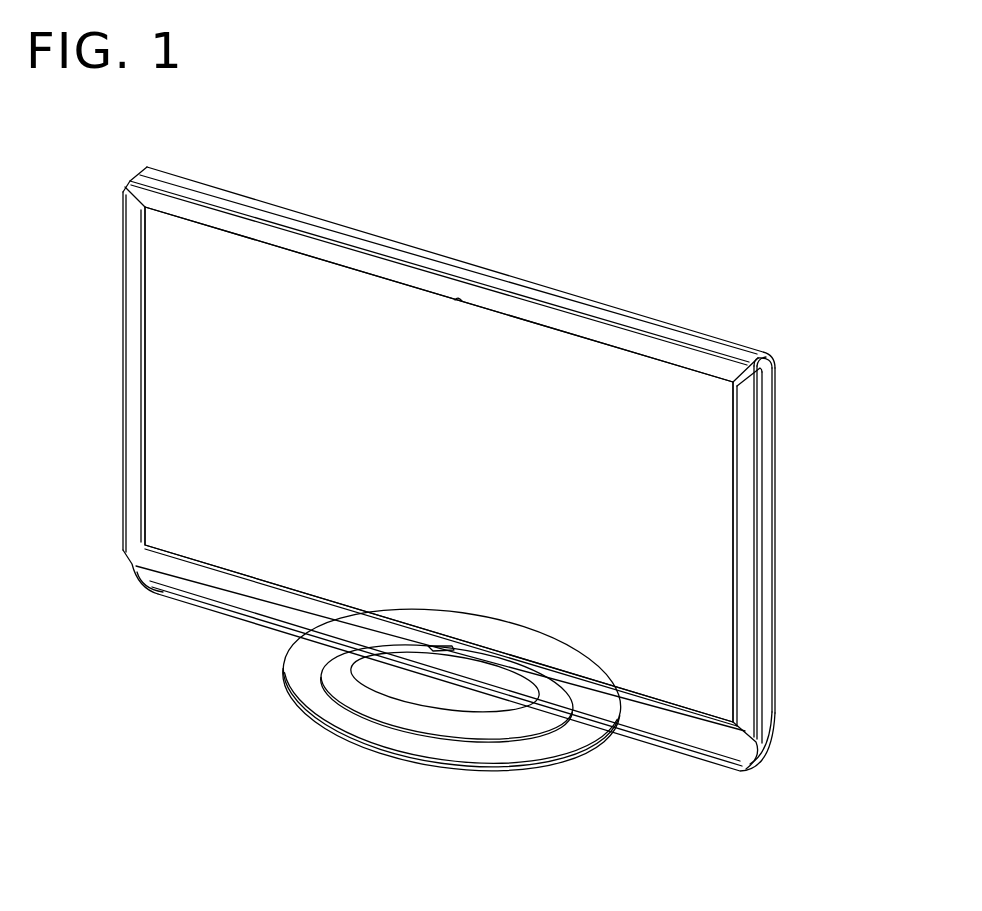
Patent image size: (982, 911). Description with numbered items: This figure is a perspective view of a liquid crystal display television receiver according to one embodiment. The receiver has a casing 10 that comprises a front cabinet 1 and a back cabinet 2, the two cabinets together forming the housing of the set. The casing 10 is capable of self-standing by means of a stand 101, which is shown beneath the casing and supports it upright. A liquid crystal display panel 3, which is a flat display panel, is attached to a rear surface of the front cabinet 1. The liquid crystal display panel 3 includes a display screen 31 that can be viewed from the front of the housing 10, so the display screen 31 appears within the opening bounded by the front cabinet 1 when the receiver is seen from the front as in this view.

The casing 10 is at (739, 243).
The front cabinet 1 is at (632, 326).
The back cabinet 2 is at (740, 351).
The liquid crystal display panel 3 is at (695, 548).
The display screen 31 is at (718, 687).
The stand 101 is at (552, 748).